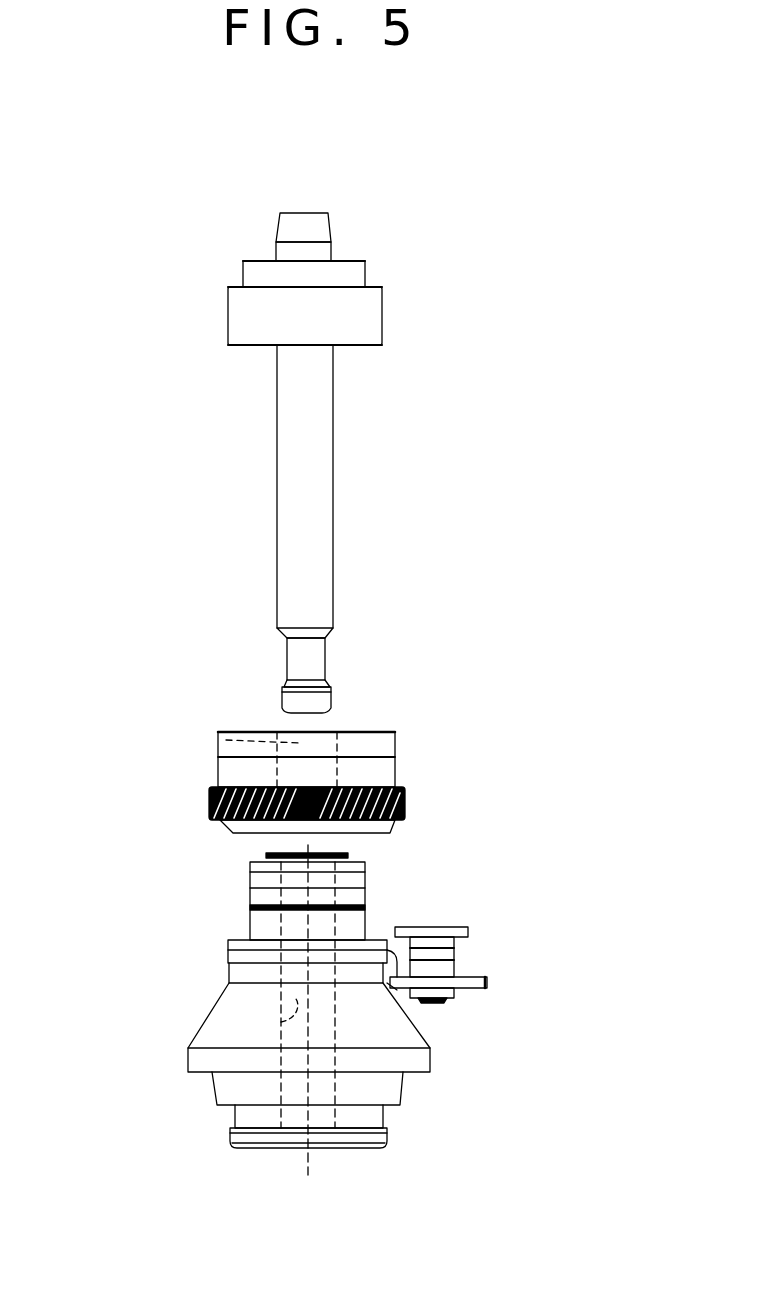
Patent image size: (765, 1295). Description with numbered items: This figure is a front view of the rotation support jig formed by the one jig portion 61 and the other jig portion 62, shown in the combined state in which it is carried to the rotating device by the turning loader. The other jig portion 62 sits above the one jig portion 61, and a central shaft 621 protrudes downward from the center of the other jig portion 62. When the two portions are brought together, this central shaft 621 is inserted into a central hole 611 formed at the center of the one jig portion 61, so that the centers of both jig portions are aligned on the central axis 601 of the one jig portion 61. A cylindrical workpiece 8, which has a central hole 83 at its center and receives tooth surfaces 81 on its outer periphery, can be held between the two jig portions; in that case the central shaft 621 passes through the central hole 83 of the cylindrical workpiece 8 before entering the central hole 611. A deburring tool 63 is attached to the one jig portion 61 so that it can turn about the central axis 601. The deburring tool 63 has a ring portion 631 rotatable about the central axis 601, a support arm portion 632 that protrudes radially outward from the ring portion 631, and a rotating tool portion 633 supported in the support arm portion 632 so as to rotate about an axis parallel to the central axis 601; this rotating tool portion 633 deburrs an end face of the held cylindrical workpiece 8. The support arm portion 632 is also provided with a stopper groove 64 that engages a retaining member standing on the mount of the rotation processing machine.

The other jig portion 62 is at (306, 463).
The central shaft 621 is at (298, 597).
The cylindrical workpiece 8 is at (344, 778).
The tooth surfaces 81 is at (405, 805).
The central hole 83 is at (300, 745).
The one jig portion 61 is at (257, 1029).
The central hole 611 is at (300, 997).
The central axis 601 is at (310, 1158).
The ring portion 631 is at (262, 960).
The deburring tool 63 is at (508, 1009).
The support arm portion 632 is at (463, 983).
The rotating tool portion 633 is at (432, 933).
The stopper groove 64 is at (487, 982).